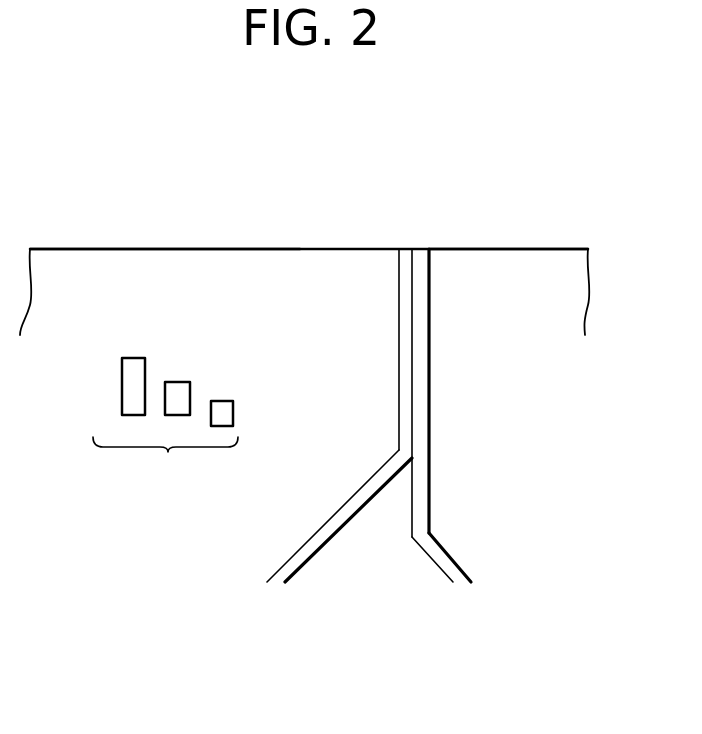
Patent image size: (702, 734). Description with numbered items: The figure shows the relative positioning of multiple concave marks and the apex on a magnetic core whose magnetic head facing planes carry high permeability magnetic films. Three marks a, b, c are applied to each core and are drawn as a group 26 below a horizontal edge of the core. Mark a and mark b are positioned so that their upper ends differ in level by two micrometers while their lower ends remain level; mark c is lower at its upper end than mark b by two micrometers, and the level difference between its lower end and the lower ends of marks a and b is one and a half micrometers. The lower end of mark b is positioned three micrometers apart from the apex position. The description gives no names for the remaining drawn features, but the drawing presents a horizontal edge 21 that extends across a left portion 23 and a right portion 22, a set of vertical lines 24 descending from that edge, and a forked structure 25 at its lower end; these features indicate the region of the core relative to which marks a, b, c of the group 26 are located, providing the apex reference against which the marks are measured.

The light guide plate assembly 21 is at (447, 198).
The right plate portion 22 is at (517, 268).
The left plate portion 23 is at (173, 266).
The slit / groove 24 is at (432, 252).
The branch portion 25 is at (413, 457).
The group of light emitting elements 26 is at (185, 412).
The mark a is at (133, 358).
The mark b is at (183, 382).
The mark c is at (233, 413).